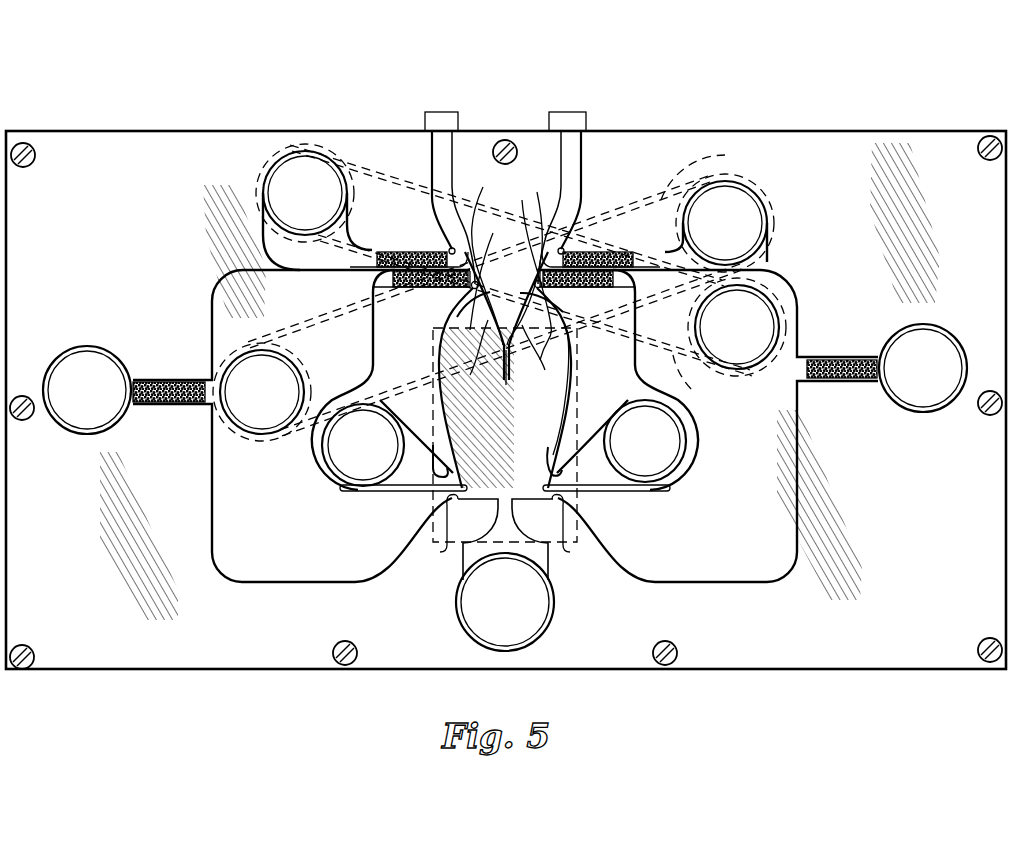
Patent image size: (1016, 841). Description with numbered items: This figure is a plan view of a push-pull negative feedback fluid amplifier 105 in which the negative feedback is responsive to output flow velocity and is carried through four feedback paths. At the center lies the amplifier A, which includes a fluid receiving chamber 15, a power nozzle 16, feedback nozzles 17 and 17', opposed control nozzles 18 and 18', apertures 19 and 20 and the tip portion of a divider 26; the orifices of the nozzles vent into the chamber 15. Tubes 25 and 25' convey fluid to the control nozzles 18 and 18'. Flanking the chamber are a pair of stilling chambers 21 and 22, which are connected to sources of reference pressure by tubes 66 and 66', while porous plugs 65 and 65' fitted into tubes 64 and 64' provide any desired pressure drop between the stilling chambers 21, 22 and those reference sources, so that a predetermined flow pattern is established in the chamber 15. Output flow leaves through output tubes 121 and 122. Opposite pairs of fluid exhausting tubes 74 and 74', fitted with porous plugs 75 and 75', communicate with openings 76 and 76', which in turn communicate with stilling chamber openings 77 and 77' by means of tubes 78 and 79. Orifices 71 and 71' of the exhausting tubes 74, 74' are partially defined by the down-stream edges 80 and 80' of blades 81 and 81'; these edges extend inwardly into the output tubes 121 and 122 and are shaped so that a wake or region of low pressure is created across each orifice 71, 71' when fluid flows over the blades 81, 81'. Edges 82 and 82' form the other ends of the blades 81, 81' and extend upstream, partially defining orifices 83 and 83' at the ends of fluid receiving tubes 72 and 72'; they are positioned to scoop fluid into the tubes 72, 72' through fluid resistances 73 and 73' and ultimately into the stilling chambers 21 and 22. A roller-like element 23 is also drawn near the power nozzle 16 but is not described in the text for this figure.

The negative feedback fluid amplifier 105 is at (862, 112).
The output tube 122 is at (450, 148).
The output tube 121 is at (572, 150).
The tube 78 is at (728, 155).
The tube 79 is at (683, 385).
The opening 76' is at (294, 207).
The opening 76 is at (750, 223).
The stilling chamber opening 77' is at (281, 386).
The stilling chamber opening 77 is at (738, 331).
The down-stream edge 80' is at (487, 259).
The down-stream edge 80 is at (527, 261).
The blade 81 is at (528, 272).
The blade 81' is at (489, 276).
The orifice 71 is at (555, 277).
The orifice 71' is at (455, 289).
The fluid exhausting tube 74 is at (592, 218).
The fluid exhausting tube 74' is at (433, 240).
The porous plug 75 is at (601, 240).
The porous plug 75' is at (409, 245).
The fluid resistance 73 is at (600, 281).
The fluid resistance 73' is at (407, 286).
The fluid receiving tube 72 is at (559, 291).
The fluid receiving tube 72' is at (453, 298).
The orifice 83 is at (556, 306).
The orifice 83' is at (468, 307).
The aperture 20 is at (433, 346).
The fluid receiving chamber 15 is at (484, 413).
The amplifier A is at (582, 370).
The aperture 19 is at (568, 365).
The divider 26 is at (512, 370).
The edge 82 is at (533, 347).
The edge 82' is at (484, 347).
The control nozzle 18 is at (542, 456).
The control nozzle 18' is at (426, 438).
The stilling chamber 21 is at (707, 426).
The stilling chamber 22 is at (301, 426).
The tube 25 is at (677, 446).
The tube 25' is at (363, 465).
The power nozzle 16 is at (525, 512).
The feedback nozzle 17 is at (568, 537).
The feedback nozzle 17' is at (443, 530).
The take-up roller 23 is at (545, 614).
The tube 64 is at (837, 392).
The tube 64' is at (172, 375).
The porous plug 65 is at (844, 351).
The porous plug 65' is at (169, 409).
The tube 66 is at (940, 368).
The tube 66' is at (87, 412).